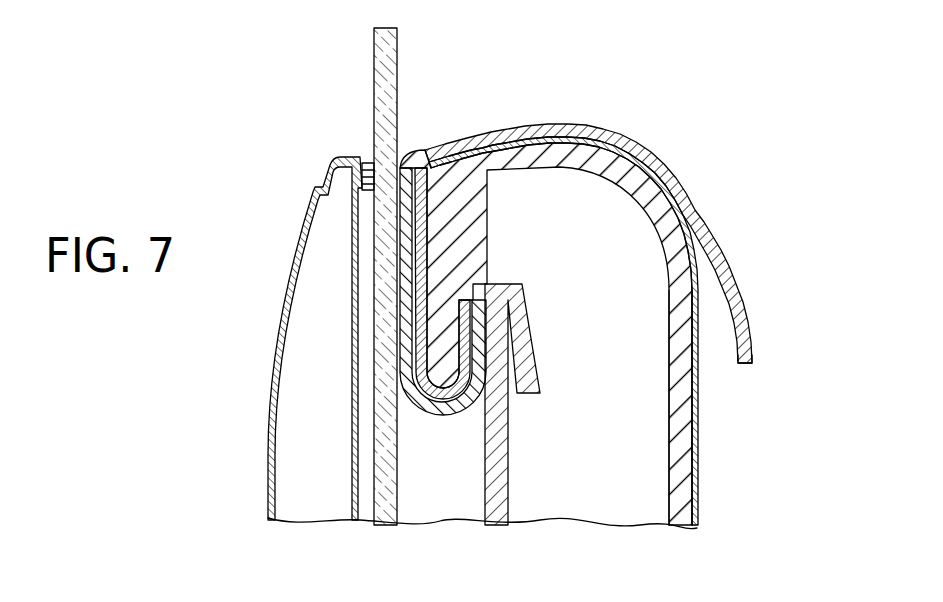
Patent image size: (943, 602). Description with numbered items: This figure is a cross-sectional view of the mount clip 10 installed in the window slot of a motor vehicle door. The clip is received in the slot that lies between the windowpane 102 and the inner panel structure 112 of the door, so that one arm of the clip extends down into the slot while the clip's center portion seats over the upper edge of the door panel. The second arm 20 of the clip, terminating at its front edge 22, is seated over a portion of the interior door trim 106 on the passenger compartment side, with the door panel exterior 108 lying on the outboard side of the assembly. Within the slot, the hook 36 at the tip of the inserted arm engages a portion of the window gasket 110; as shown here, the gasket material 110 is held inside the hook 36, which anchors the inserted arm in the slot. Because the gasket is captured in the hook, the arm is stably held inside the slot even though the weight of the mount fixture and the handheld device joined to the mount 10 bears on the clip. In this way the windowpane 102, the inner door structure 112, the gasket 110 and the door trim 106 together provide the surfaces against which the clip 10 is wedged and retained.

The mount clip 10 is at (582, 123).
The second arm 20 is at (672, 168).
The front edge of second arm 22 is at (745, 363).
The hook or curved tip 36 is at (443, 416).
The windowpane 102 is at (374, 50).
The passenger compartment cabin door trim 106 is at (699, 484).
The door panel exterior 108 is at (268, 441).
The window gasket 110 is at (477, 373).
The metal door structure—inner door panel 112 is at (643, 192).